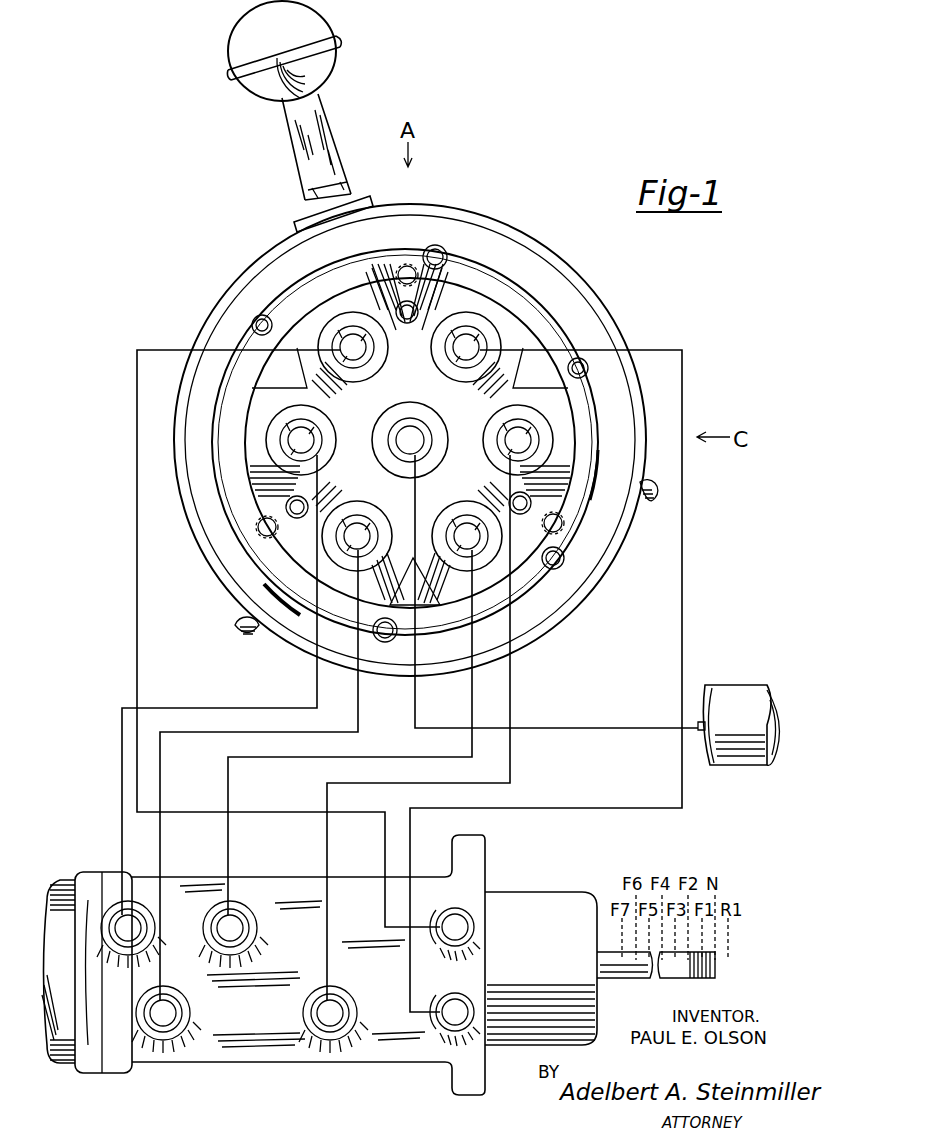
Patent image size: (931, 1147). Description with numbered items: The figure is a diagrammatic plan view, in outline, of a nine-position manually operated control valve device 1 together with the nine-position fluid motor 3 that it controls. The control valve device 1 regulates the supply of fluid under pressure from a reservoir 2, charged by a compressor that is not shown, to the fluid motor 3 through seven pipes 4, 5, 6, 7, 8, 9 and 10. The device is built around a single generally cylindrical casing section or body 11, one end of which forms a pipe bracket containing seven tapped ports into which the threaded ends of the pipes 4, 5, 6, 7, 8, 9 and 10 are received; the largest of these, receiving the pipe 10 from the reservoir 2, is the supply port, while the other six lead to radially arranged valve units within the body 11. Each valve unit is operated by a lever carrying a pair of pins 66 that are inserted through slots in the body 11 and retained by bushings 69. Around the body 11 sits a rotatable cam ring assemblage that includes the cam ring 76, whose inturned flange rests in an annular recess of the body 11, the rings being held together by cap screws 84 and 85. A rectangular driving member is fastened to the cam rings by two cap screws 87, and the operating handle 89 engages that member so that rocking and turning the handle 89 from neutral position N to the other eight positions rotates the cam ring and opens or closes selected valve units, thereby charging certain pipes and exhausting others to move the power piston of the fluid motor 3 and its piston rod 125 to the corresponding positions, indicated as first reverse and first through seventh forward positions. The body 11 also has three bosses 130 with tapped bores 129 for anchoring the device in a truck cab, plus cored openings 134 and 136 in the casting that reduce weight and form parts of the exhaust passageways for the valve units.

The control valve device 1 is at (600, 270).
The reservoir 2 is at (734, 676).
The fluid motor 3 is at (260, 870).
The pipe 4 is at (350, 332).
The pipe 5 is at (466, 330).
The pipe 6 is at (532, 440).
The pipe 7 is at (472, 552).
The pipe 8 is at (355, 560).
The pipe 9 is at (288, 441).
The pipe 10 is at (570, 726).
The casing section or body 11 is at (493, 305).
The pins 66 is at (520, 507).
The bushings 69 is at (558, 563).
The cam ring 76 is at (305, 632).
The cap screw 84 is at (247, 634).
The cap screw 85 is at (647, 500).
The cap screws 87 is at (298, 208).
The operating handle 89 is at (300, 167).
The piston rod 125 is at (622, 966).
The tapped bores 129 is at (403, 268).
The bosses 130 is at (430, 278).
The first cored opening 134 is at (395, 307).
The second cored opening 136 is at (277, 360).